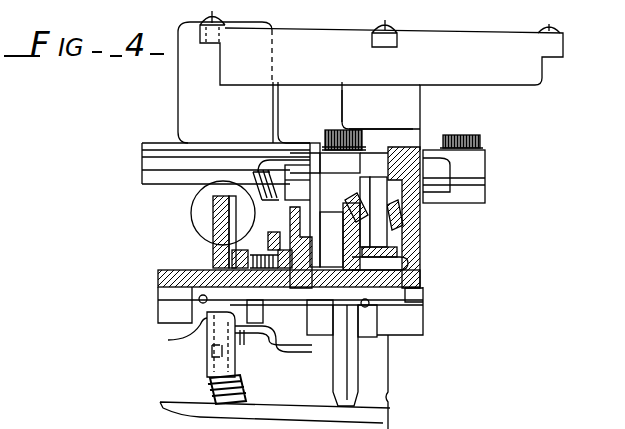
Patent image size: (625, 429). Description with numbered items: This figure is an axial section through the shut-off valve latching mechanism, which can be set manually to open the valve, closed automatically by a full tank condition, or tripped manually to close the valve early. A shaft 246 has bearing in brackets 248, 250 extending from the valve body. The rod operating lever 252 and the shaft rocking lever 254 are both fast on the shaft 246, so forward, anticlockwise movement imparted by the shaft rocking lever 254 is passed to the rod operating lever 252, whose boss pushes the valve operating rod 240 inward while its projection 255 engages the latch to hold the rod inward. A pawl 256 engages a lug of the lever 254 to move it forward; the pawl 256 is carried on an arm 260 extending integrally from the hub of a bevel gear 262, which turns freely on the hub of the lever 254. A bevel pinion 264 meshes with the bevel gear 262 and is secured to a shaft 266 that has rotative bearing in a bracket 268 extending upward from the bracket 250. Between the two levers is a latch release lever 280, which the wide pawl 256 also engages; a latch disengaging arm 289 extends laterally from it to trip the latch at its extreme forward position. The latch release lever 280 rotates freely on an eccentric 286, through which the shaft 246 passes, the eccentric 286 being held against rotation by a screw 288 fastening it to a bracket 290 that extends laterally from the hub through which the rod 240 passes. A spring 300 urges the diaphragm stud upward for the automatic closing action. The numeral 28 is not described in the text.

The bracket 28 is at (304, 122).
The valve operating rod 240 is at (196, 208).
The shaft 246 is at (163, 296).
The bracket 248 is at (166, 272).
The bracket 250 is at (421, 276).
The rod operating lever 252 is at (212, 226).
The shaft rocking lever 254 is at (342, 285).
The projection 255 is at (200, 347).
The pawl 256 is at (330, 128).
The arm 260 is at (330, 136).
The bevel gear 262 is at (421, 256).
The bevel pinion 264 is at (403, 225).
The shaft 266 is at (421, 150).
The bracket 268 is at (422, 215).
The latch release lever 280 is at (283, 196).
The eccentric 286 is at (282, 335).
The screw 288 is at (170, 340).
The latch disengaging arm 289 is at (243, 355).
The bracket 290 is at (218, 250).
The spring 300 is at (208, 388).